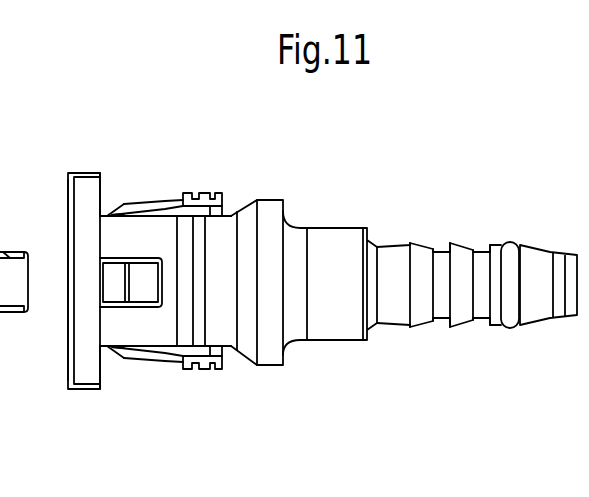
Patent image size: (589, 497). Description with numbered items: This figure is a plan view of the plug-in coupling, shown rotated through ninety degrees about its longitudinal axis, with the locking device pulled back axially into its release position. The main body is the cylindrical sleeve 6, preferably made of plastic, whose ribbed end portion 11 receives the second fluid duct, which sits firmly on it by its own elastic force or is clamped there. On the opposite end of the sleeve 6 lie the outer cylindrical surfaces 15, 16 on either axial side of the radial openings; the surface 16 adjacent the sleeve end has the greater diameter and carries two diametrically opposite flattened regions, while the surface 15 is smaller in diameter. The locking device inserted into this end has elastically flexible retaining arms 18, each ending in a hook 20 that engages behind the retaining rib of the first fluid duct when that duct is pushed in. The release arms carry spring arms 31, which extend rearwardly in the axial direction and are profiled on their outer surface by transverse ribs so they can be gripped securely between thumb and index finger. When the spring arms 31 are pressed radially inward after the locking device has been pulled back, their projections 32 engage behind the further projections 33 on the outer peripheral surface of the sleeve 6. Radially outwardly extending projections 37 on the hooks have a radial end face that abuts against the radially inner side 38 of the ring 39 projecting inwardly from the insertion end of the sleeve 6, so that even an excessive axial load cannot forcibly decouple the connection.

The cylindrical sleeve 6 is at (335, 227).
The ribbed end portion 11 is at (480, 257).
The outer cylindrical surface 15 is at (265, 215).
The outer cylindrical surface 16 is at (83, 190).
The retaining arm 18 is at (145, 290).
The hook 20 is at (118, 287).
The spring arm 31 is at (170, 208).
The projection 32 is at (227, 209).
The further projection 33 is at (209, 206).
The radially outwardly extending projection 37 is at (123, 205).
The radially inner side 38 is at (100, 192).
The ring 39 is at (67, 197).